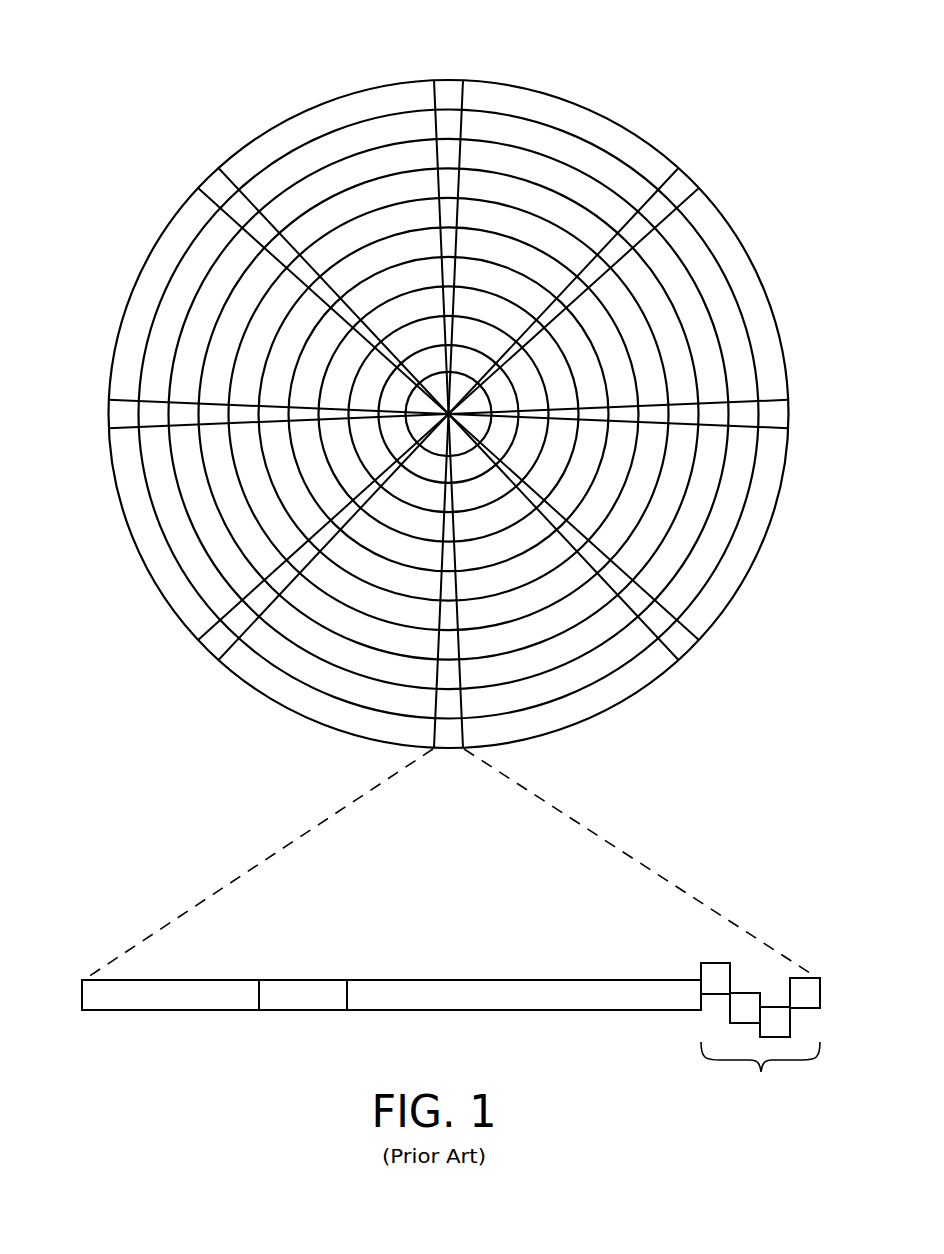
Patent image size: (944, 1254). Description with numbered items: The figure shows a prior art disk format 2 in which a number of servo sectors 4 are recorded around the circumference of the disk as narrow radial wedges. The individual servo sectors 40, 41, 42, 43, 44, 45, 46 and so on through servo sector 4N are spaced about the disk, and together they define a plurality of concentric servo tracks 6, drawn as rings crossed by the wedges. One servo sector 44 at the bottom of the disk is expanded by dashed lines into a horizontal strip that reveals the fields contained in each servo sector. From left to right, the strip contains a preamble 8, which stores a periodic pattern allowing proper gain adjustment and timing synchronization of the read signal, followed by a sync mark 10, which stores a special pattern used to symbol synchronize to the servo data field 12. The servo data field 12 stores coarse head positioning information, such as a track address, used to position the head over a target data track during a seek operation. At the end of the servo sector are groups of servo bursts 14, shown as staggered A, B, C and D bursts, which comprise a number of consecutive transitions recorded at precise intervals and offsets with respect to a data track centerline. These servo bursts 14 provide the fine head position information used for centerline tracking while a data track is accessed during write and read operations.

The disk format 2 is at (198, 86).
The servo sector 4 is at (448, 426).
The servo sector 40 is at (448, 90).
The servo sector 41 is at (686, 174).
The servo sector 42 is at (792, 414).
The servo sector 43 is at (690, 652).
The servo sector 44 is at (302, 832).
The servo sector 45 is at (214, 648).
The servo sector 46 is at (115, 417).
The servo sector 4N is at (215, 188).
The servo track 6 is at (562, 147).
The preamble 8 is at (150, 1012).
The sync mark 10 is at (301, 1012).
The servo data field 12 is at (510, 1012).
The servo bursts 14 is at (688, 945).